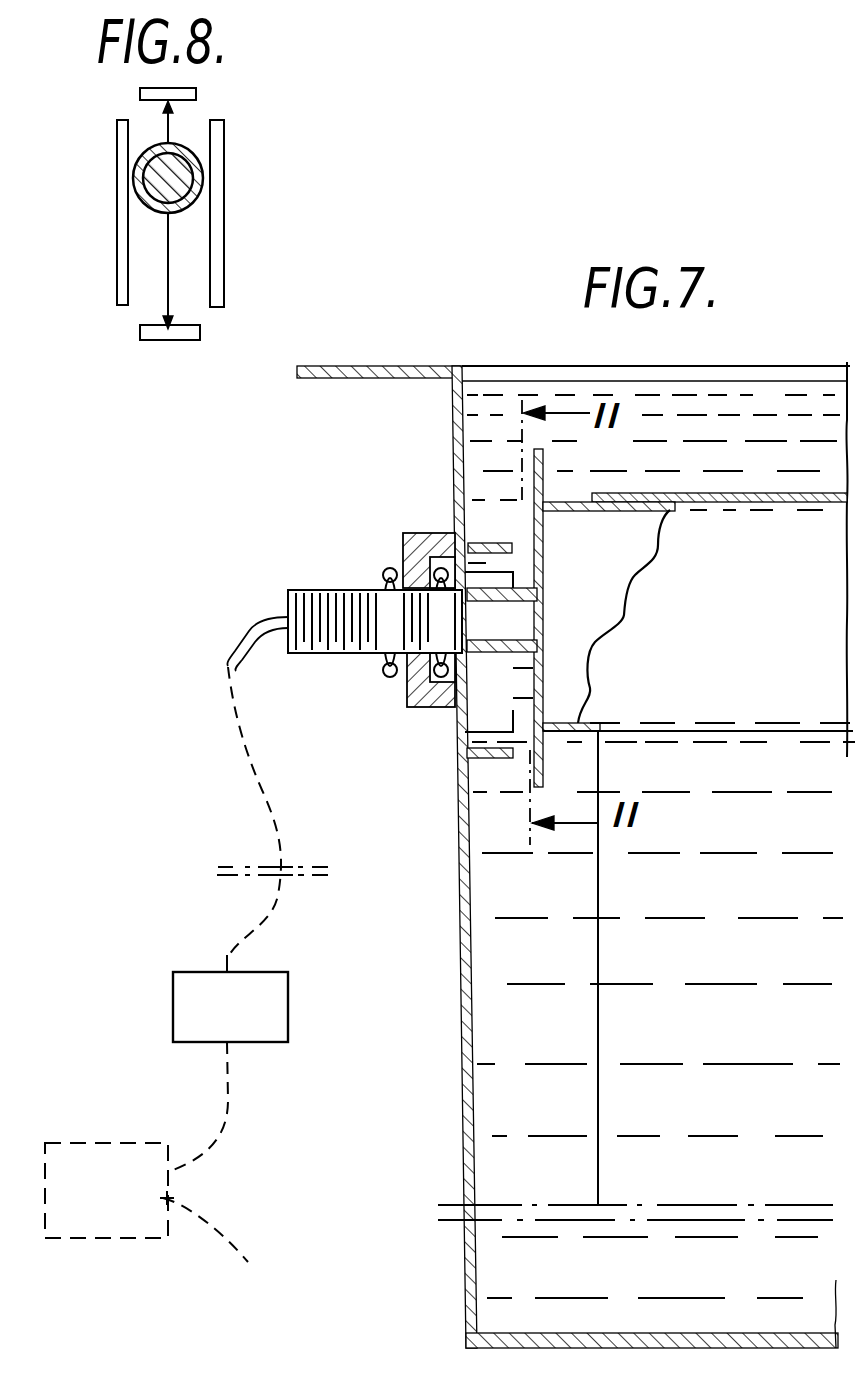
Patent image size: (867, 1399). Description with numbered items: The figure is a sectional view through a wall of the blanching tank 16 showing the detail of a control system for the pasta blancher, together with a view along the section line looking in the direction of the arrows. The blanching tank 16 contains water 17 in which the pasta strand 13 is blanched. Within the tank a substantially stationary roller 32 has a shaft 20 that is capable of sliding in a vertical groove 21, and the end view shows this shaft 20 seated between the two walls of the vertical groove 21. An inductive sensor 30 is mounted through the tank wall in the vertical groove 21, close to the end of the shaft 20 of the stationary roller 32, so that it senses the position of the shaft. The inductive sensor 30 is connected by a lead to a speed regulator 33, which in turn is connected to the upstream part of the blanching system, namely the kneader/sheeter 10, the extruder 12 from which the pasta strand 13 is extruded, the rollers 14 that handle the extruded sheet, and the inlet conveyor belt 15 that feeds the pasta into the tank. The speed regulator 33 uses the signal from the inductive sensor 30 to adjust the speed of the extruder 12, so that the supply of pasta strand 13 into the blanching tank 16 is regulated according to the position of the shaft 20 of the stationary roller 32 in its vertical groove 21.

In FIG. 7, the kneader/sheeter 10 is at (210, 1173).
In FIG. 7, the extruder 12 is at (210, 1173).
In FIG. 7, the pasta strand 13 is at (726, 505).
In FIG. 7, the rollers 14 is at (210, 1173).
In FIG. 7, the inlet conveyor belt 15 is at (210, 1173).
In FIG. 7, the blanching tank 16 is at (462, 943).
In FIG. 7, the water 17 is at (746, 425).
In FIG. 8, the shaft 20 is at (178, 176).
In FIG. 7, the shaft 20 is at (498, 625).
In FIG. 8, the vertical groove 21 is at (185, 250).
In FIG. 7, the inductive sensor 30 is at (330, 637).
In FIG. 7, the stationary roller 32 is at (768, 668).
In FIG. 7, the speed regulator 33 is at (260, 1018).